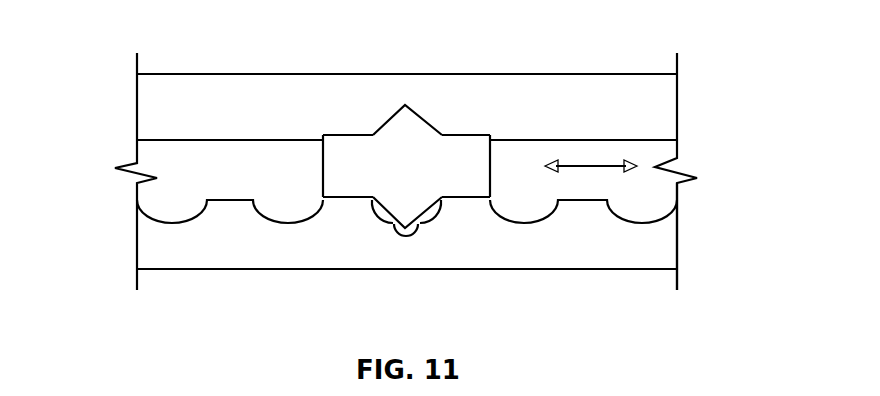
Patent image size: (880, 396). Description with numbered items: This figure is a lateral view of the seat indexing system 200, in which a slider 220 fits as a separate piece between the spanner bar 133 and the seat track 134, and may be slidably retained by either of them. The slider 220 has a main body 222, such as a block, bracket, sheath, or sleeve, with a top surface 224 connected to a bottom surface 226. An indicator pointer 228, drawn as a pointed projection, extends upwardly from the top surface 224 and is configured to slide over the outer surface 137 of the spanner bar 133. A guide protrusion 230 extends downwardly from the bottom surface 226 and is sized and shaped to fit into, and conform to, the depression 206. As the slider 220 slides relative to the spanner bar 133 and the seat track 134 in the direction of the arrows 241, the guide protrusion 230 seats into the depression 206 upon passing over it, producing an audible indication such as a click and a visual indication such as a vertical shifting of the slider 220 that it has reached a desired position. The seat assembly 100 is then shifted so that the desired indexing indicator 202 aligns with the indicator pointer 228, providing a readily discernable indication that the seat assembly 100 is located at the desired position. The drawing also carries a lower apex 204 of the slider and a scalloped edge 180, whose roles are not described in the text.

The seat indexing system 200 is at (183, 44).
The outer surface 137 is at (238, 93).
The spanner bar 133 is at (310, 74).
The seat assembly 100 is at (639, 64).
The indicator pointer 228 is at (402, 107).
The indexing indicator 202 is at (407, 74).
The top surface 224 is at (465, 135).
The slider 220 is at (490, 165).
The main body 222 is at (323, 165).
The bottom surface 226 is at (465, 197).
The lower apex of tab 204 is at (407, 233).
The depression 206 is at (396, 229).
The guide protrusion 230 is at (422, 215).
The scalloped edge 180 is at (288, 223).
The seat track 134 is at (667, 248).
The arrows 241 is at (592, 168).